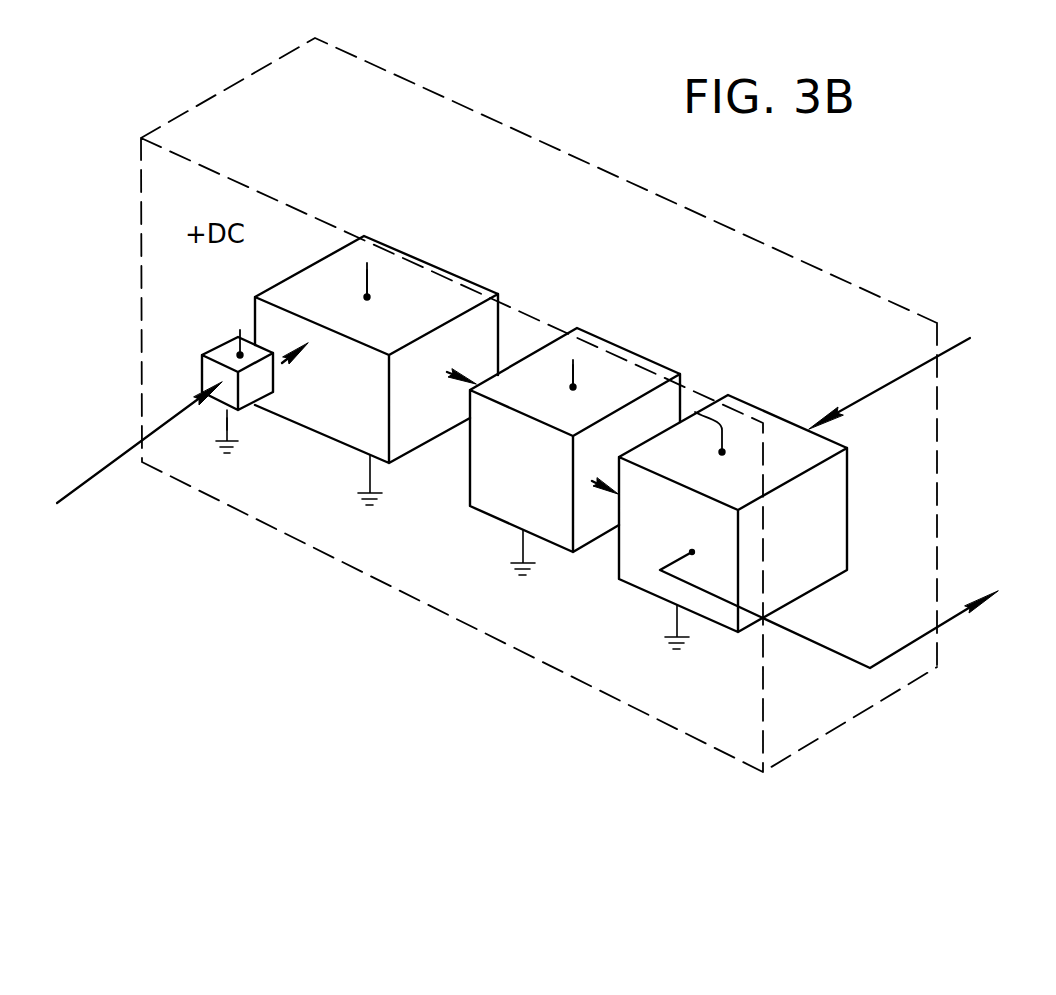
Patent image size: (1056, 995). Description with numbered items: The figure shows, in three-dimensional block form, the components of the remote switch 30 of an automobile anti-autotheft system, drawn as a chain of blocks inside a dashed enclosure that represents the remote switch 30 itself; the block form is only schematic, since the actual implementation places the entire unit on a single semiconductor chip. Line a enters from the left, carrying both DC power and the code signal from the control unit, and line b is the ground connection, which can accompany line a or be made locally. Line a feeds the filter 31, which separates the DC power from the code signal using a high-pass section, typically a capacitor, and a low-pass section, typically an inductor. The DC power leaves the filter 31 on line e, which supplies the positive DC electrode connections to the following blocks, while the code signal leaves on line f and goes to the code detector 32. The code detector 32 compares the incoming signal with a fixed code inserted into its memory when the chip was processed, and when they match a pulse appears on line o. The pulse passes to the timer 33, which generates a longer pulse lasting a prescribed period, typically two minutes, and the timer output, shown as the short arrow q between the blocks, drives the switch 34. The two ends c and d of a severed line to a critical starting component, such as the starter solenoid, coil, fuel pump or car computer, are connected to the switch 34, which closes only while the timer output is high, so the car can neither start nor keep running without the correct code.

The remote switch 30 is at (333, 557).
The filter 31 is at (203, 370).
The code detector 32 is at (345, 420).
The timer 33 is at (503, 487).
The switch 34 is at (643, 562).
The line a is at (100, 472).
The line b is at (226, 422).
The line end c is at (970, 340).
The line end d is at (947, 620).
The line e is at (293, 295).
The line f is at (282, 363).
The line o is at (449, 372).
The beam q is at (610, 485).